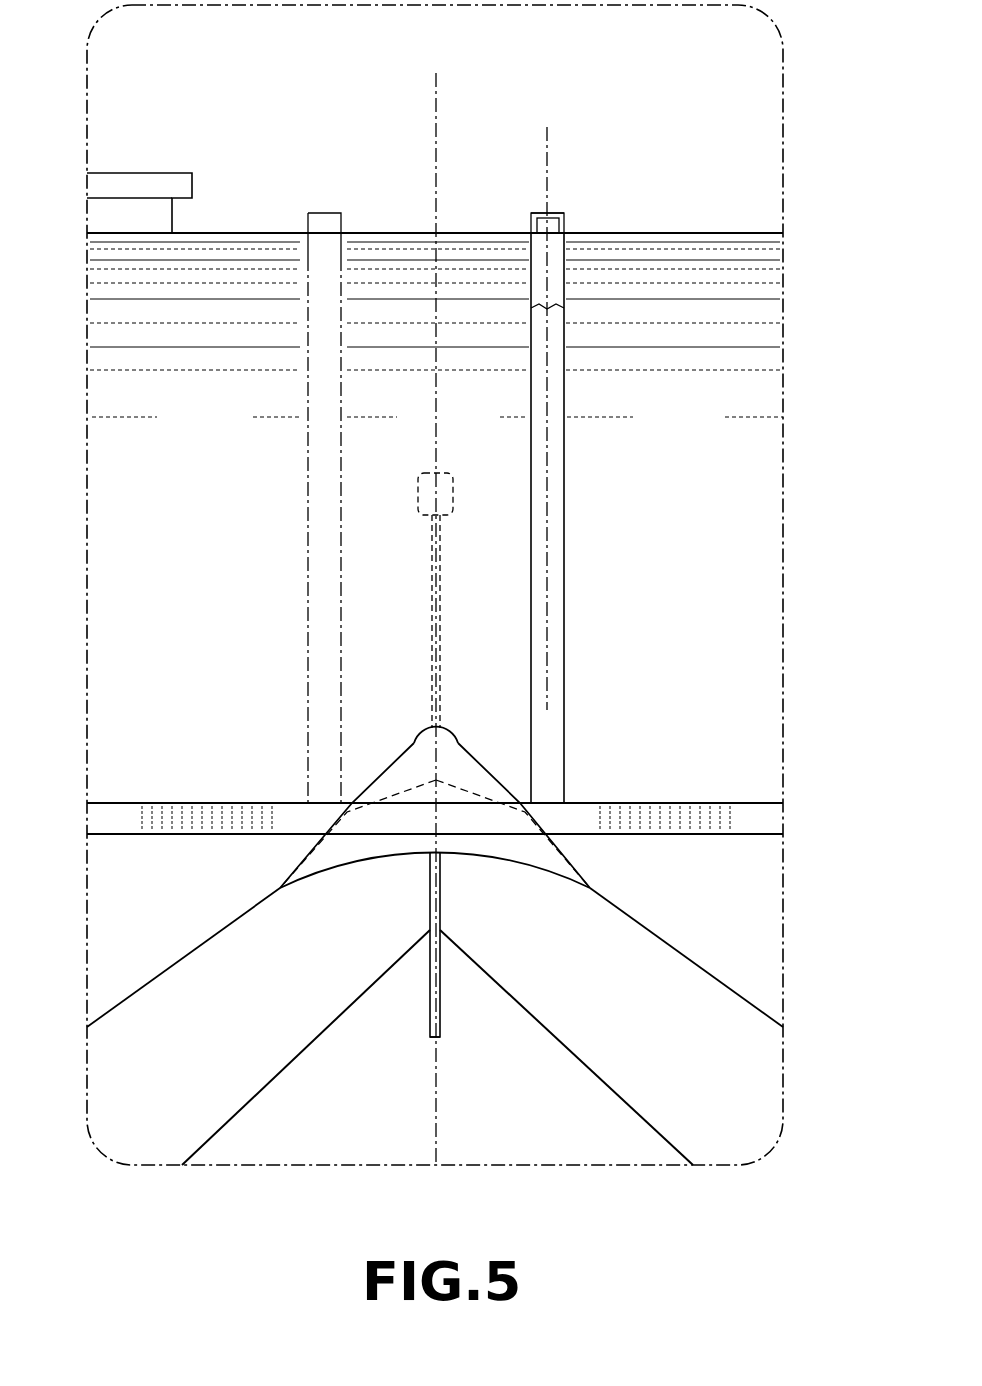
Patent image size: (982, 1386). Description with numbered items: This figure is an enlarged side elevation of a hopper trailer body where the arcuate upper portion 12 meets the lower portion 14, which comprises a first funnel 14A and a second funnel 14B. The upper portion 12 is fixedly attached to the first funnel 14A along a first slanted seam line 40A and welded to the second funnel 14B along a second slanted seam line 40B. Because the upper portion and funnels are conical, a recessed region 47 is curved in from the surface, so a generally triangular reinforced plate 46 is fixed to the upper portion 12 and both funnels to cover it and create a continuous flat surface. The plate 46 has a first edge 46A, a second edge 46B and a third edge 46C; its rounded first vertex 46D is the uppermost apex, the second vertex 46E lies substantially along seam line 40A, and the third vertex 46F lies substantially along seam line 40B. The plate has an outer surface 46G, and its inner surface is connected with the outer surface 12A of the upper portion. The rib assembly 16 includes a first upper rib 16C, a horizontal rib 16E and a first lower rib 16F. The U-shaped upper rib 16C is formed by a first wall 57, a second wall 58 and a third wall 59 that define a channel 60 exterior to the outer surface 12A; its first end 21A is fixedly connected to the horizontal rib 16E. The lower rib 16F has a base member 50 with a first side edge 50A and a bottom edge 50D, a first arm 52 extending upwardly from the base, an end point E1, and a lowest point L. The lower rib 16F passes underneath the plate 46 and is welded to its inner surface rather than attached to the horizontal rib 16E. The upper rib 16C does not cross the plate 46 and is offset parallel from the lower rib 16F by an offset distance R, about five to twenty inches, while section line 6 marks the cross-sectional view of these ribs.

The upper portion 12 is at (705, 229).
The outer surface 12A is at (710, 464).
The section line 6- 6 is at (436, 73).
The offset distance R is at (547, 140).
The rib assembly 16 is at (420, 465).
The first upper rib 16C is at (306, 547).
The horizontal rib 16E is at (738, 812).
The first lower rib 16F is at (447, 990).
The first wall 57 is at (529, 228).
The second wall 58 is at (551, 212).
The third wall 59 is at (561, 225).
The channel 60 is at (548, 236).
The end point E1 is at (440, 468).
The first arm 52 is at (443, 622).
The reinforced plate 46 is at (450, 805).
The first edge 46A is at (365, 785).
The second edge 46B is at (500, 788).
The third edge 46C is at (527, 862).
The first vertex 46D is at (437, 728).
The second vertex 46E is at (280, 887).
The third vertex 46F is at (593, 890).
The outer surface 46G is at (422, 742).
The recessed region 47 is at (414, 870).
The first side edge 50A is at (453, 862).
The base member 50 is at (430, 978).
The bottom edge 50D is at (381, 1057).
The lowest point L is at (436, 1040).
The first end 21A is at (548, 792).
The first slanted seam line 40A is at (180, 962).
The second slanted seam line 40B is at (690, 962).
The lower portion 14 is at (437, 1075).
The first funnel 14A is at (235, 1119).
The second funnel 14B is at (638, 1120).